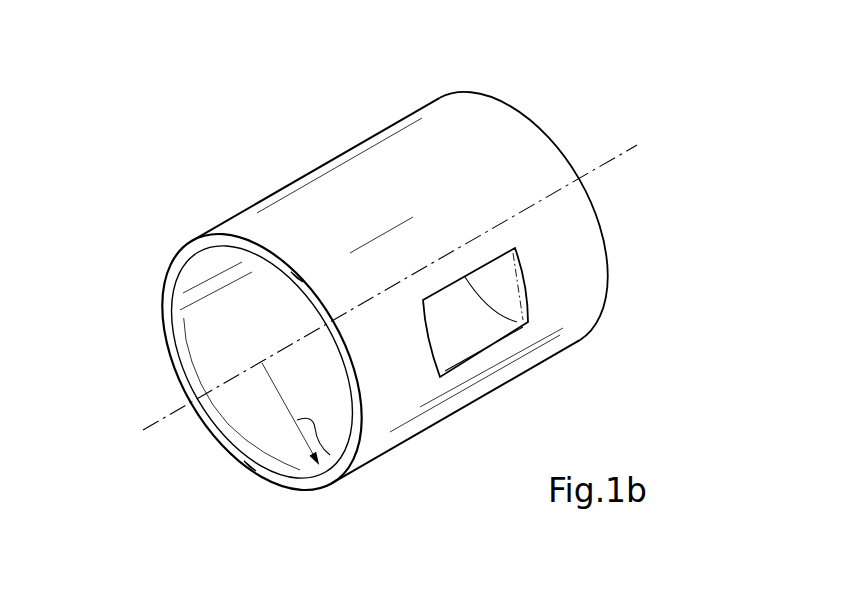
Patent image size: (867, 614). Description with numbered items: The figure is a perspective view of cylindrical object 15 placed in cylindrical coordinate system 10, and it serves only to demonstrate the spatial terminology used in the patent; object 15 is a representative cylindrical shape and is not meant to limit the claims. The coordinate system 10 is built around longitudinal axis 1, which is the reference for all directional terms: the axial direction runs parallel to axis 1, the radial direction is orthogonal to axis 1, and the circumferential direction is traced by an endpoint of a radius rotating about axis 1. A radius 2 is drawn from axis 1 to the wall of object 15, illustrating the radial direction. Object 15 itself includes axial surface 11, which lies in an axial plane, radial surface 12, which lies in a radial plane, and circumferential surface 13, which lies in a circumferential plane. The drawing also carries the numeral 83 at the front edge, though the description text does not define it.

The longitudinal axis 1 is at (155, 426).
The radius 2 is at (352, 467).
The cylindrical coordinate system 10 is at (542, 102).
The axial surface 11 is at (503, 325).
The radial surface 12 is at (275, 477).
The circumferential surface 13 is at (363, 188).
The cylindrical object 15 is at (418, 97).
The front edge ring 83 is at (173, 267).